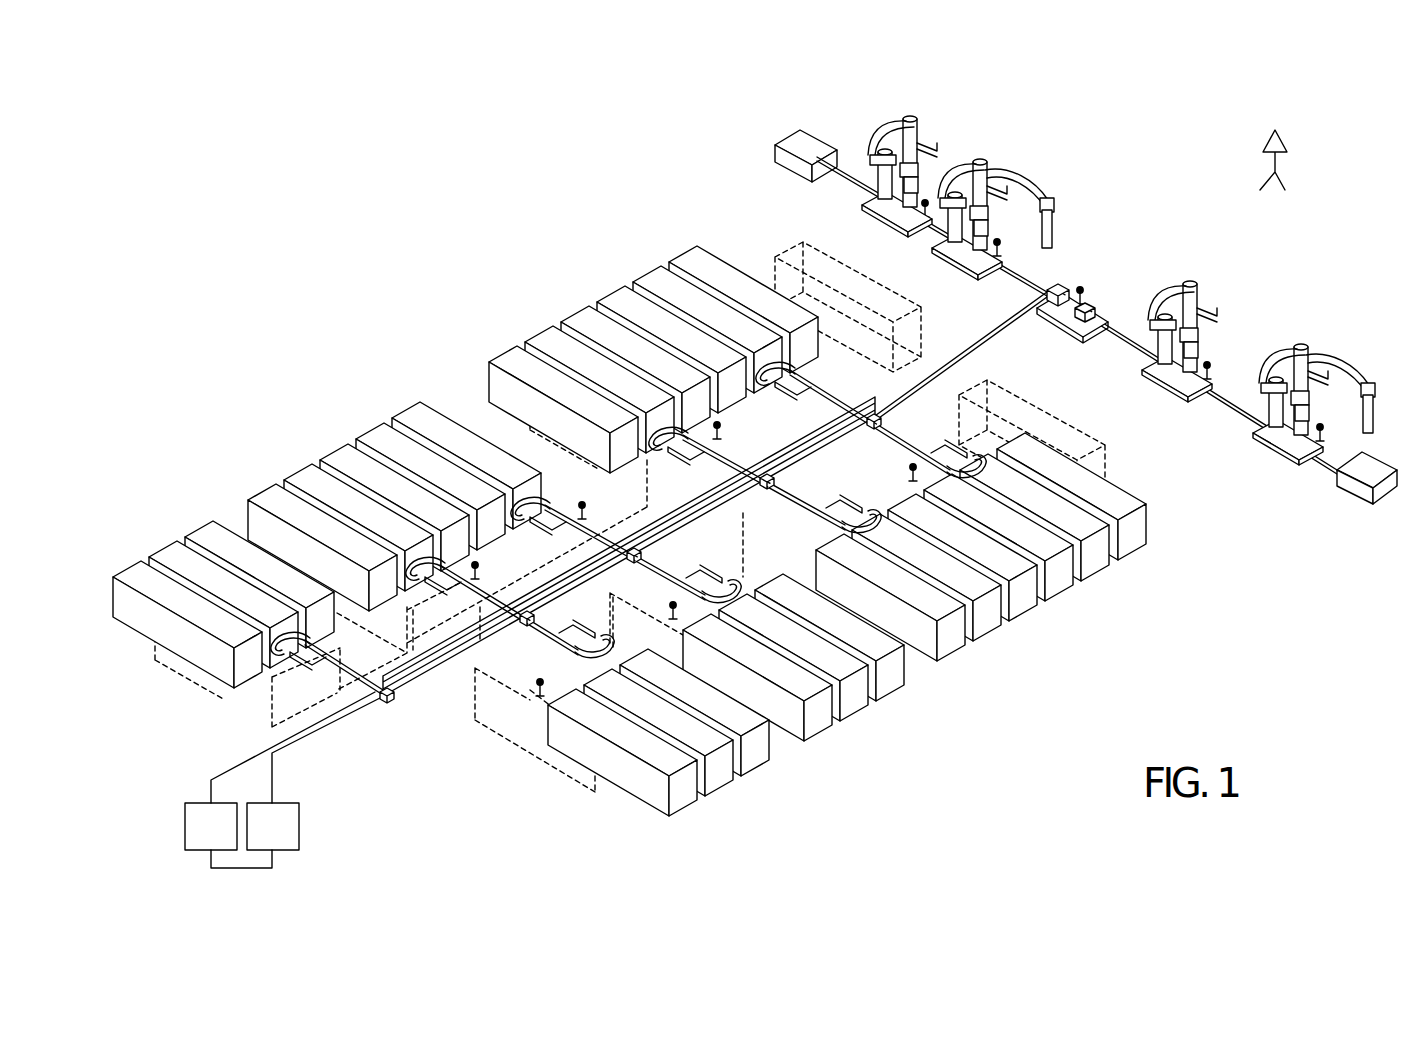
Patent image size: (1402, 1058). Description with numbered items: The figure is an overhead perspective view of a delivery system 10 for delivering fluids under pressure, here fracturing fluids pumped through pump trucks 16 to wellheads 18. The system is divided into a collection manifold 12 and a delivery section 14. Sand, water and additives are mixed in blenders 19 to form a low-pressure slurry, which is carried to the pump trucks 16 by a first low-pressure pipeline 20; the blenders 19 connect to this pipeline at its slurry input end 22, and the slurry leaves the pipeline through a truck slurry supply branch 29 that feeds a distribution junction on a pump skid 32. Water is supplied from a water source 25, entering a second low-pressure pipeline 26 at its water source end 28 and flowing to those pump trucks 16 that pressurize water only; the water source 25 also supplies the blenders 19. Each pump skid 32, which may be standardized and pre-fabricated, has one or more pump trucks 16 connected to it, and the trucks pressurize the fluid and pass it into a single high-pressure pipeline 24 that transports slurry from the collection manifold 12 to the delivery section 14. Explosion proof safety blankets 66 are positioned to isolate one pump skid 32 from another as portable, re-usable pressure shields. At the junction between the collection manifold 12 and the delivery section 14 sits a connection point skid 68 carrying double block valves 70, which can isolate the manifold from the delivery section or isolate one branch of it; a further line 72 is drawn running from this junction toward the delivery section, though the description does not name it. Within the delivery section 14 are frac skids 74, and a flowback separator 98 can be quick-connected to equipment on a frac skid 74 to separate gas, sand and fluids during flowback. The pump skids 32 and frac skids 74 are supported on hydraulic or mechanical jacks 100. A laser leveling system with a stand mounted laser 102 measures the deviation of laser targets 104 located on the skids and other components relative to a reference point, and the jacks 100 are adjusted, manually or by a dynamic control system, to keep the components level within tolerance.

The delivery system 10 is at (590, 118).
The collection manifold 12 is at (400, 283).
The delivery section 14 is at (1135, 168).
The pump truck 16 is at (308, 478).
The wellhead 18 is at (1040, 185).
The blender 19 is at (290, 838).
The first low-pressure pipeline 20 is at (772, 468).
The slurry input end 22 is at (406, 698).
The high-pressure pipeline 24 is at (1010, 352).
The water source 25 is at (228, 838).
The second low-pressure pipeline 26 is at (437, 678).
The water source end 28 is at (378, 702).
The truck slurry supply branch 29 is at (843, 400).
The pump skid 32 is at (278, 684).
The explosion proof safety blanket 66 is at (812, 252).
The connection point skid 68 is at (1098, 312).
The double block valve 70 is at (1067, 292).
The robot rail 72 is at (1025, 285).
The frac skid 74 is at (947, 266).
The flowback separator 98 is at (792, 140).
The jack 100 is at (300, 683).
The laser 102 is at (1280, 139).
The laser target 104 is at (478, 548).